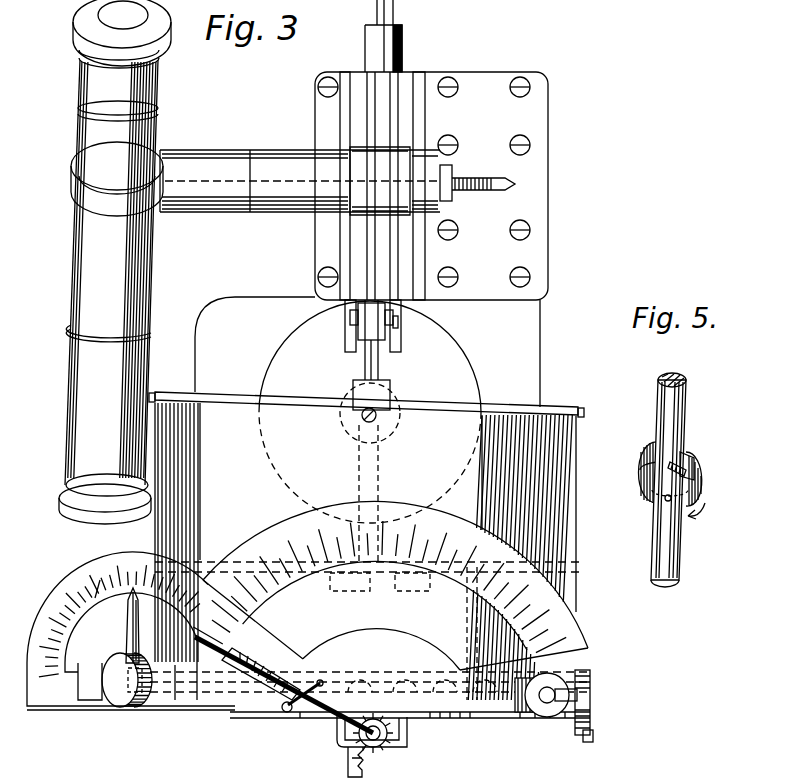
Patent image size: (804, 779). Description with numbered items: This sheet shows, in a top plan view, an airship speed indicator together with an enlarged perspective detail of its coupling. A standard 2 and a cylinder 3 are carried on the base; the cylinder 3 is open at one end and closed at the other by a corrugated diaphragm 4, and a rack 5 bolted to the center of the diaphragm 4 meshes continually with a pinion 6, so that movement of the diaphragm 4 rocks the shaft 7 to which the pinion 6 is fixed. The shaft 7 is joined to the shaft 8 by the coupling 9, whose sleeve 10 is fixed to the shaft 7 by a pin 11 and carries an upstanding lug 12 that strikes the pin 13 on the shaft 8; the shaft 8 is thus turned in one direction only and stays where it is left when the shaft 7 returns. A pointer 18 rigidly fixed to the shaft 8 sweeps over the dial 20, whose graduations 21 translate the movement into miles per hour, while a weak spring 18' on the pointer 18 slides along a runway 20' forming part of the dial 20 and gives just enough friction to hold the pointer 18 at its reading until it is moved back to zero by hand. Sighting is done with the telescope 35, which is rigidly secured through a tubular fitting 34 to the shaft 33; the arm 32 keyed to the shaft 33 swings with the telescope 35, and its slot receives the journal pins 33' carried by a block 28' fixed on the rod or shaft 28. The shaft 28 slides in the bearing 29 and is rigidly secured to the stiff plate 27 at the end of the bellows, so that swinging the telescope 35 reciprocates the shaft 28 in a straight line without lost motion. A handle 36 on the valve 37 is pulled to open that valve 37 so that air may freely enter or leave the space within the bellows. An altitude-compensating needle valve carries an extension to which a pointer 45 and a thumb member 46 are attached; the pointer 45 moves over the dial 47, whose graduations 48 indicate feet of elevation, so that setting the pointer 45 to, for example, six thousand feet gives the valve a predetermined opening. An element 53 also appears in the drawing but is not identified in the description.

In FIG. 3, the standard 2 is at (428, 118).
In FIG. 3, the cylinder 3 is at (156, 453).
In FIG. 3, the diaphragm 4 is at (458, 720).
In FIG. 3, the rack 5 is at (347, 764).
In FIG. 3, the pinion 6 is at (408, 742).
In FIG. 5, the shaft 7 is at (660, 556).
In FIG. 3, the shaft 8 is at (376, 747).
In FIG. 5, the shaft 8 is at (680, 414).
In FIG. 5, the coupling 9 is at (709, 470).
In FIG. 5, the sleeve 10 is at (700, 487).
In FIG. 5, the pin 11 is at (666, 500).
In FIG. 5, the upstanding lug 12 is at (692, 458).
In FIG. 5, the pin 13 is at (688, 475).
In FIG. 3, the pointer 18 is at (284, 682).
In FIG. 3, the spring 18' is at (312, 681).
In FIG. 3, the dial 20 is at (390, 580).
In FIG. 3, the runway 20' is at (381, 636).
In FIG. 3, the graduations 21 is at (275, 590).
In FIG. 3, the plate 27 is at (210, 560).
In FIG. 3, the rod or shaft 28 is at (348, 344).
In FIG. 3, the block 28' is at (348, 332).
In FIG. 3, the bearing 29 is at (390, 396).
In FIG. 3, the arm 32 is at (345, 302).
In FIG. 3, the shaft 33 is at (477, 179).
In FIG. 3, the journal pins 33' is at (419, 335).
In FIG. 3, the tubular fitting 34 is at (80, 200).
In FIG. 3, the telescope 35 is at (79, 125).
In FIG. 3, the handle 36 is at (590, 700).
In FIG. 3, the valve 37 is at (548, 705).
In FIG. 3, the pointer 45 is at (127, 634).
In FIG. 3, the thumb member 46 is at (116, 697).
In FIG. 3, the dial 47 is at (62, 584).
In FIG. 3, the graduations 48 is at (100, 580).
In FIG. 3, the horizontal shaft 53 is at (262, 152).